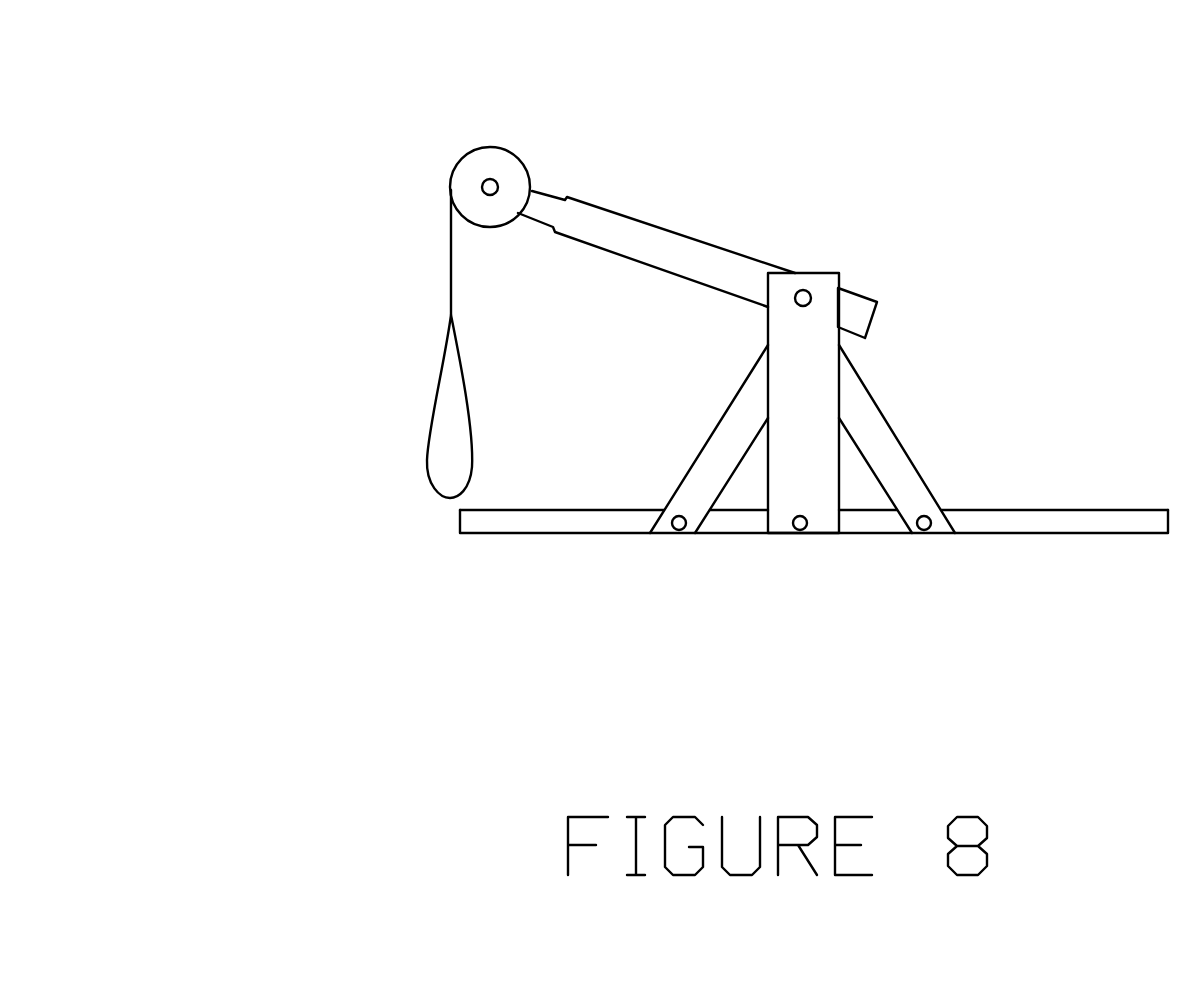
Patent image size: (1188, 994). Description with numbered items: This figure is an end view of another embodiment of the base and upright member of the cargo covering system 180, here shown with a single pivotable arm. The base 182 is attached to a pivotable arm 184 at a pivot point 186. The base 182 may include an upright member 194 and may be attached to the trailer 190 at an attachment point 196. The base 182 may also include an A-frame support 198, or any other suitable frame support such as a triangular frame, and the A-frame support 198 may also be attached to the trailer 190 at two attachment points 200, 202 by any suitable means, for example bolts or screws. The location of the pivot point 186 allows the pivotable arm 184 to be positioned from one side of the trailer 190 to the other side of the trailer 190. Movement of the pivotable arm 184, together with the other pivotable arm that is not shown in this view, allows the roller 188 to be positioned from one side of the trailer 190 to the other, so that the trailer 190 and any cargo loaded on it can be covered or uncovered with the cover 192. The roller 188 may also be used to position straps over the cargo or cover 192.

The cargo covering system 180 is at (370, 160).
The base 182 is at (705, 392).
The pivotable arm 184 is at (690, 238).
The pivot point 186 is at (805, 290).
The roller 188 is at (500, 147).
The trailer 190 is at (488, 648).
The cover 192 is at (440, 362).
The upright member 194 is at (955, 343).
The attachment point 196 is at (830, 628).
The A-frame support 198 is at (905, 447).
The attachment point 200 is at (650, 667).
The attachment point 202 is at (1038, 645).